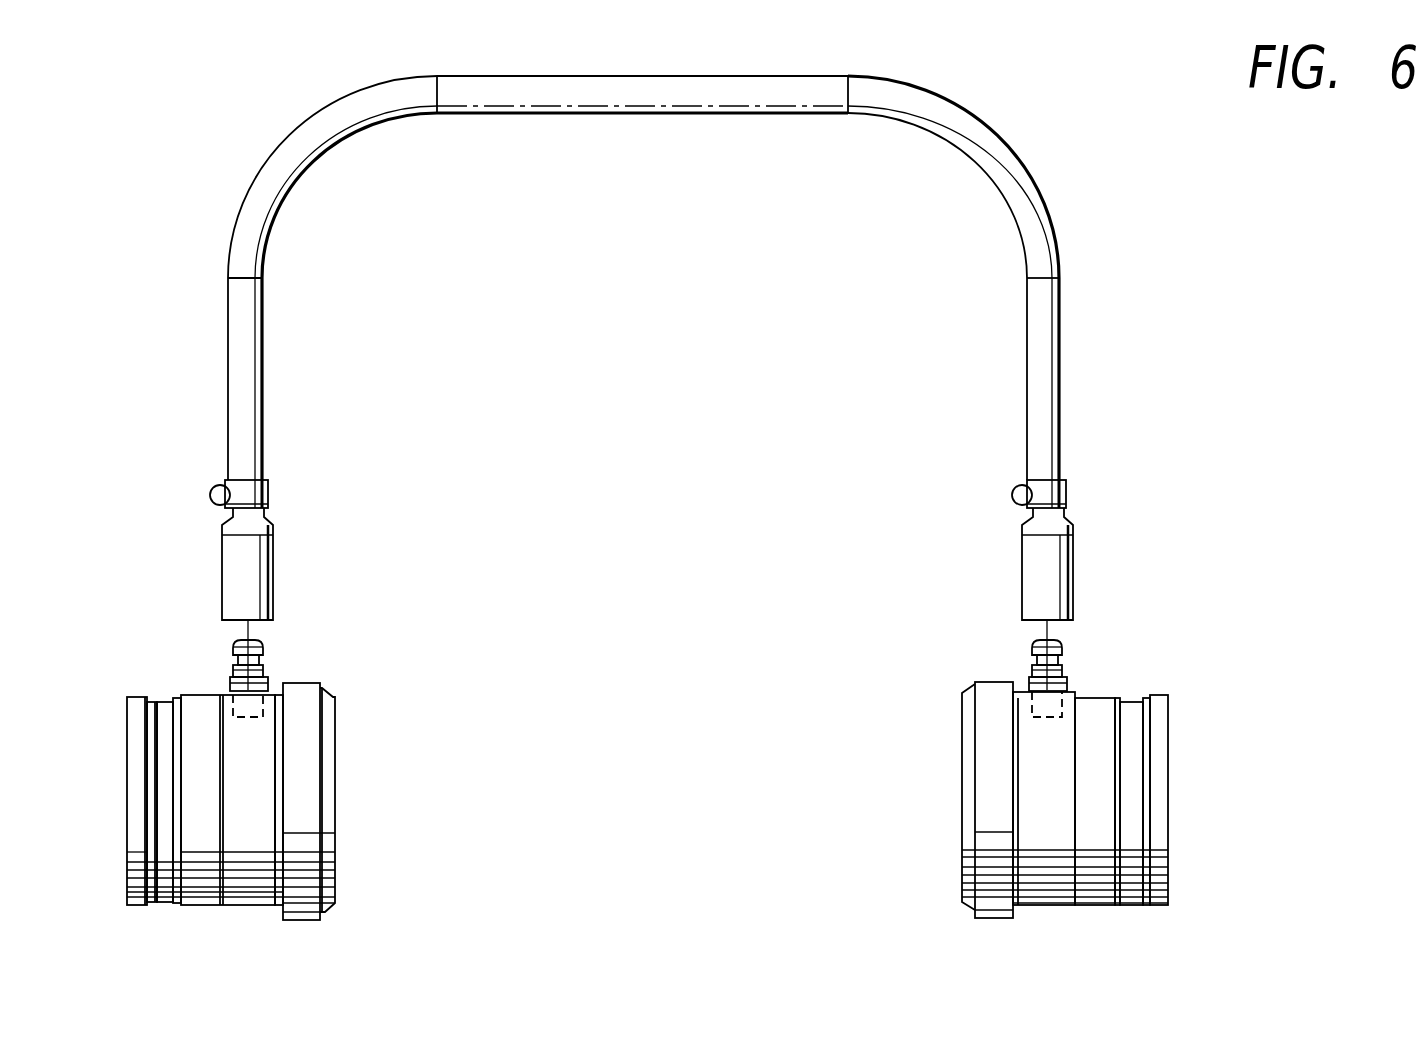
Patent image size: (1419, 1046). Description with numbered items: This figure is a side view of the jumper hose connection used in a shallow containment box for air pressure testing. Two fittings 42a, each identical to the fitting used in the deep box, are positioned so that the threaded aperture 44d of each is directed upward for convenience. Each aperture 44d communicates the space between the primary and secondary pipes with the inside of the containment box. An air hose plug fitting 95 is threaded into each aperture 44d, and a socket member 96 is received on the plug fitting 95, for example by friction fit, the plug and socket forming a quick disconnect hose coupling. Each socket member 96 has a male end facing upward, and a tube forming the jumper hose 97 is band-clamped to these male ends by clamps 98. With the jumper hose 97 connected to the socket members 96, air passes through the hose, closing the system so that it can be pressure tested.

The jumper hose 97 is at (603, 113).
The clamp 98 is at (270, 490).
The socket member 96 is at (277, 567).
The air hose plug fitting 95 is at (265, 662).
The threaded aperture 44d is at (250, 717).
The fitting 42a is at (337, 835).